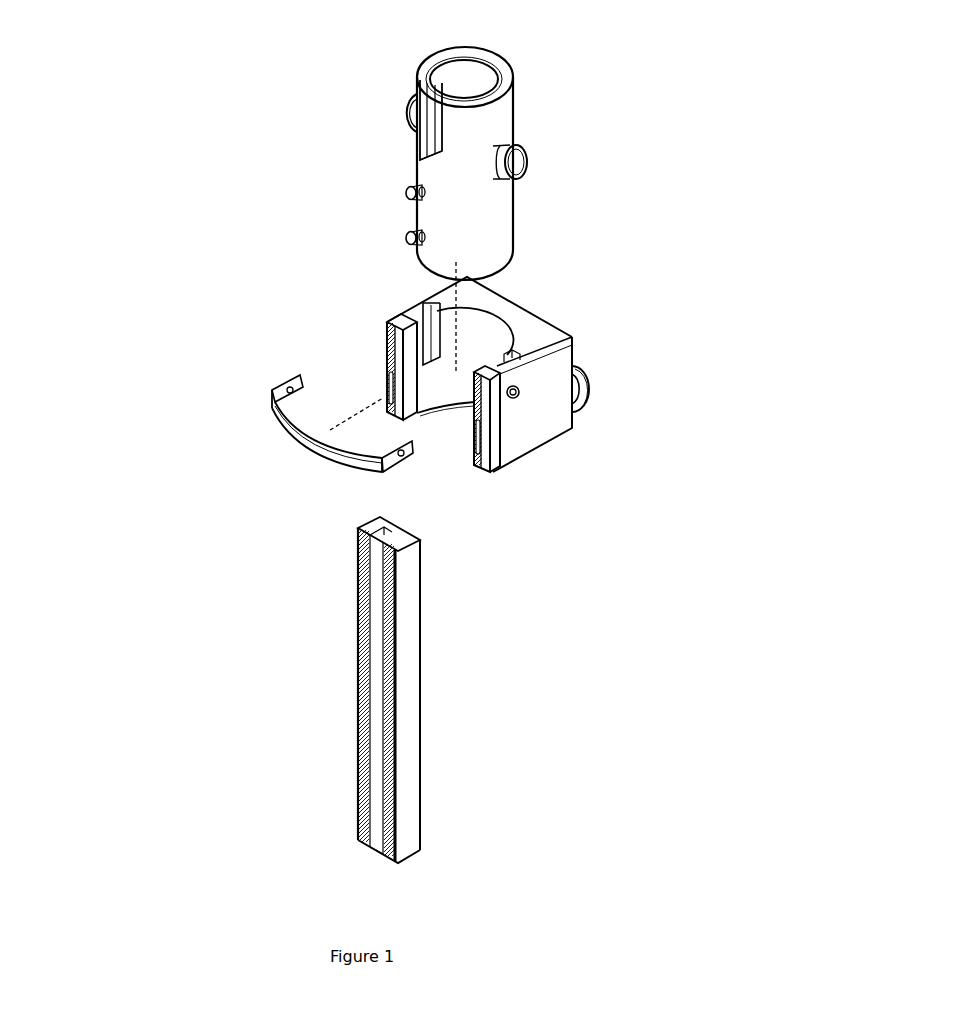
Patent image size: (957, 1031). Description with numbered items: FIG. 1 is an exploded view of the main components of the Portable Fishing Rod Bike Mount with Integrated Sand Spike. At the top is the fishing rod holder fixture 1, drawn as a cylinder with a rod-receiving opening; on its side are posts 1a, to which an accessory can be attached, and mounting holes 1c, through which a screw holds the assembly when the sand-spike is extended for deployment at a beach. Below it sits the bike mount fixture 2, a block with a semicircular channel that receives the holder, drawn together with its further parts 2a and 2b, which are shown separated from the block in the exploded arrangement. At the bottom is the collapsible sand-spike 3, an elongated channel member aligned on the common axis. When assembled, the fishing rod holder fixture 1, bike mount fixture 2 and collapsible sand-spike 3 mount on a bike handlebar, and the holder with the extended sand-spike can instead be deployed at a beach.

The fishing rod holder fixture 1 is at (420, 53).
The posts 1a is at (403, 202).
The mounting holes 1c is at (523, 108).
The bike mount fixture 2 is at (575, 320).
The hook loop 2a is at (615, 417).
The curved clamp strap 2b is at (255, 413).
The collapsible sand-spike 3 is at (340, 710).